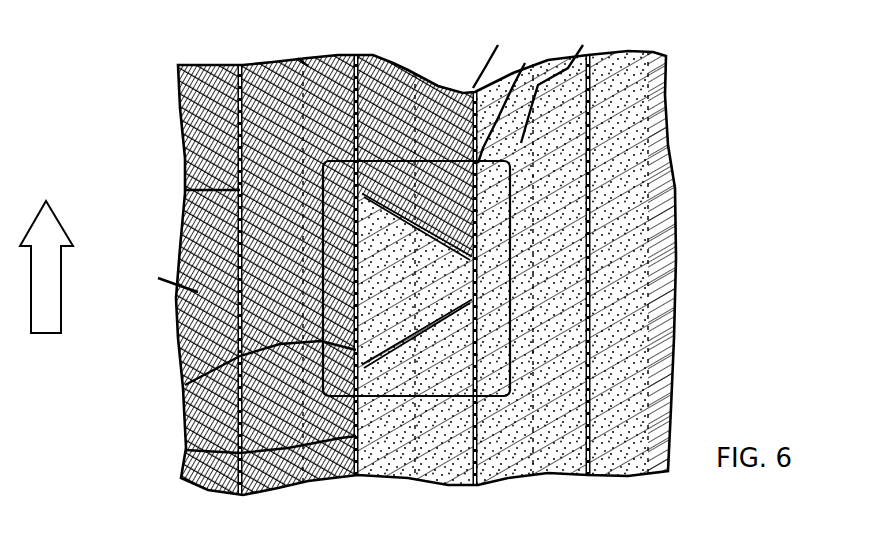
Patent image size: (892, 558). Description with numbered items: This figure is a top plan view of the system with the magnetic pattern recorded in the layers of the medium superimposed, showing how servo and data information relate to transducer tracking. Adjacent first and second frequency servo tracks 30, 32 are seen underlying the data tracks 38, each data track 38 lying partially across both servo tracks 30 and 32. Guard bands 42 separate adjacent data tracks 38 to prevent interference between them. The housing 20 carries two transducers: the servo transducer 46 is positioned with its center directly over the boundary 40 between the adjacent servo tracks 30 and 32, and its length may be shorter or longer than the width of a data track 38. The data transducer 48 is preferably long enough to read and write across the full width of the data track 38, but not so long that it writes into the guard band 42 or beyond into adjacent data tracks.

The housing 20 is at (509, 100).
The first frequency servo track 30 is at (405, 479).
The second frequency servo track 32 is at (185, 486).
The data track 38 is at (460, 52).
The boundary 40 is at (290, 50).
The guard band 42 is at (583, 47).
The servo transducer 46 is at (177, 377).
The data transducer 48 is at (357, 185).